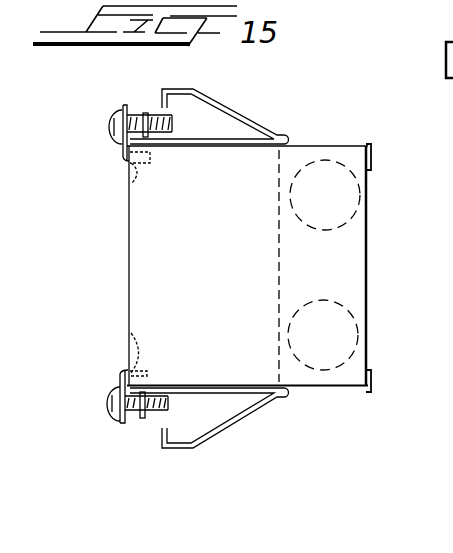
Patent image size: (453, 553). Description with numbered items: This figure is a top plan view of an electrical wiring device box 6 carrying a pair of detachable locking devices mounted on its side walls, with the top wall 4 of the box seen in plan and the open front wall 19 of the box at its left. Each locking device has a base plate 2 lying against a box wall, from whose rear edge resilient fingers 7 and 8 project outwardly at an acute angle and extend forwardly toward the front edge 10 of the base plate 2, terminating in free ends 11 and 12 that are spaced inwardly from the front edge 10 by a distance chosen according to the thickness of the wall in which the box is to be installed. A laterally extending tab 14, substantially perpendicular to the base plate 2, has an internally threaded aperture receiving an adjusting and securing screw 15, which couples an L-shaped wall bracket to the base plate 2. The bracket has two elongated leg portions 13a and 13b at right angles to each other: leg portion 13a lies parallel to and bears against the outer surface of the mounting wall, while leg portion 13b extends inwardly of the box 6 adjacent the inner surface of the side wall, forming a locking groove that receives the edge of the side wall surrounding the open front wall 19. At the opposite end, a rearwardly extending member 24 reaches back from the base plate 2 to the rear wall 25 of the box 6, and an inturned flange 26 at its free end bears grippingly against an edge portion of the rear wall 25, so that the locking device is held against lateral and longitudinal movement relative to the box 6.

The base plate 2 is at (204, 270).
The top wall 4 is at (255, 246).
The electrical wiring device box 6 is at (368, 211).
The resilient finger 7 is at (209, 100).
The resilient finger 8 is at (203, 435).
The front edge 10 is at (130, 182).
The free end 11 is at (158, 96).
The free end 12 is at (160, 444).
The elongated leg portion 13a is at (122, 107).
The elongated leg portion 13b is at (126, 160).
The tab 14 is at (147, 108).
The adjusting and securing screw 15 is at (142, 112).
The open front wall 19 is at (128, 262).
The rearwardly extending member 24 is at (247, 123).
The rear wall 25 is at (368, 328).
The inturned flange 26 is at (373, 156).